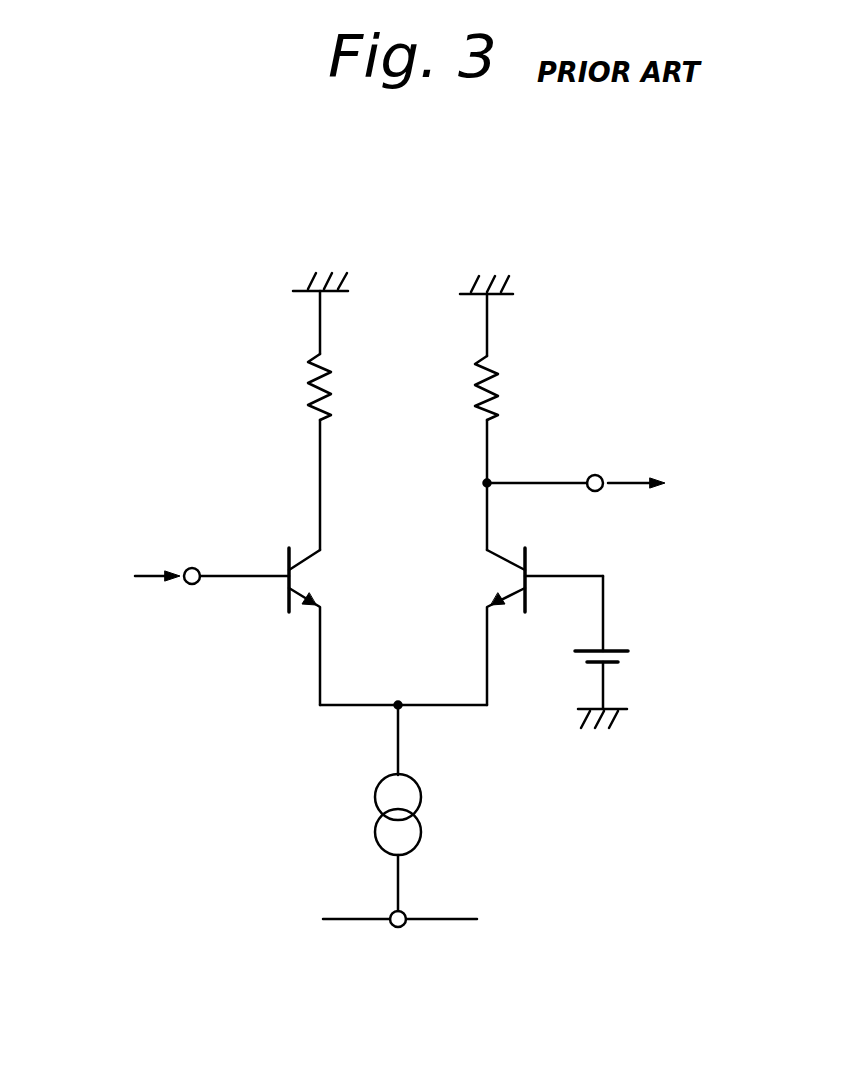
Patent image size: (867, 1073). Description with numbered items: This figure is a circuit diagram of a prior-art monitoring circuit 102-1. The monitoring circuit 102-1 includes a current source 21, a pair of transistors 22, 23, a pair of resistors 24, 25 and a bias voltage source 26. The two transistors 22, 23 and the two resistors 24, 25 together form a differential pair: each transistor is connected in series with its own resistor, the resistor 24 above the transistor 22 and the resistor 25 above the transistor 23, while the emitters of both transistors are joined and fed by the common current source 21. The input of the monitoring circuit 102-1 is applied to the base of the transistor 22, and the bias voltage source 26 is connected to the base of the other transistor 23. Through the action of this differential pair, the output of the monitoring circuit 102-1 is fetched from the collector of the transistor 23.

The monitoring circuit 102-1 is at (412, 559).
The current source 21 is at (419, 808).
The transistor 22 is at (298, 579).
The transistor 23 is at (515, 579).
The resistor 24 is at (310, 376).
The resistor 25 is at (498, 373).
The bias voltage source 26 is at (615, 643).